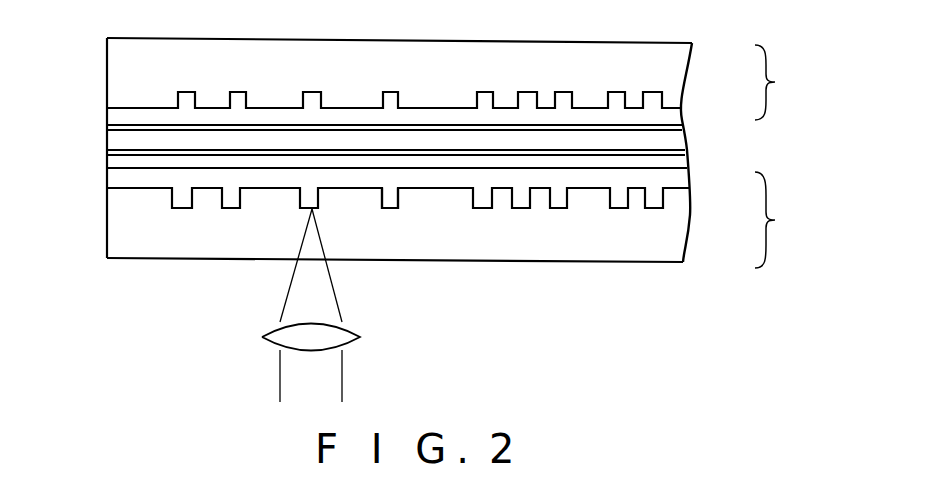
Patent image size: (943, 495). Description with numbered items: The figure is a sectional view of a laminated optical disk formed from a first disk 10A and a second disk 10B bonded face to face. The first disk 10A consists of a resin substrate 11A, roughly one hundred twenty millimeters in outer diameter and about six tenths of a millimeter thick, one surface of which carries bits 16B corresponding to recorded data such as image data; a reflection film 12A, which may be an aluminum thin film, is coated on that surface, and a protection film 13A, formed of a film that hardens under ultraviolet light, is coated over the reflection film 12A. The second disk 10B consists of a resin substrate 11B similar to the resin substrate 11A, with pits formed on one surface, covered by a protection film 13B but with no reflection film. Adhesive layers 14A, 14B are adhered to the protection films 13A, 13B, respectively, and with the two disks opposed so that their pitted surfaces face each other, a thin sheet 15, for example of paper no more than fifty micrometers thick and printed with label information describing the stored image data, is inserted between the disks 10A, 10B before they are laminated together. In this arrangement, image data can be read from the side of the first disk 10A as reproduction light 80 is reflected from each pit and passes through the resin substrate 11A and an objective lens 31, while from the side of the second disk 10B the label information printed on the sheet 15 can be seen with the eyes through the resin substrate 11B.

The first disk 10A is at (753, 209).
The second disk 10B is at (752, 96).
The resin substrate 11A is at (112, 226).
The resin substrate 11B is at (112, 47).
The reflection film 12A is at (112, 175).
The protection film 13A is at (680, 167).
The protection film 13B is at (670, 121).
The adhesive layer 14A is at (683, 153).
The adhesive layer 14B is at (683, 130).
The sheet 15 is at (112, 137).
The bits 16B is at (390, 207).
The reproduction light 80 is at (322, 293).
The objective lens 31 is at (343, 340).